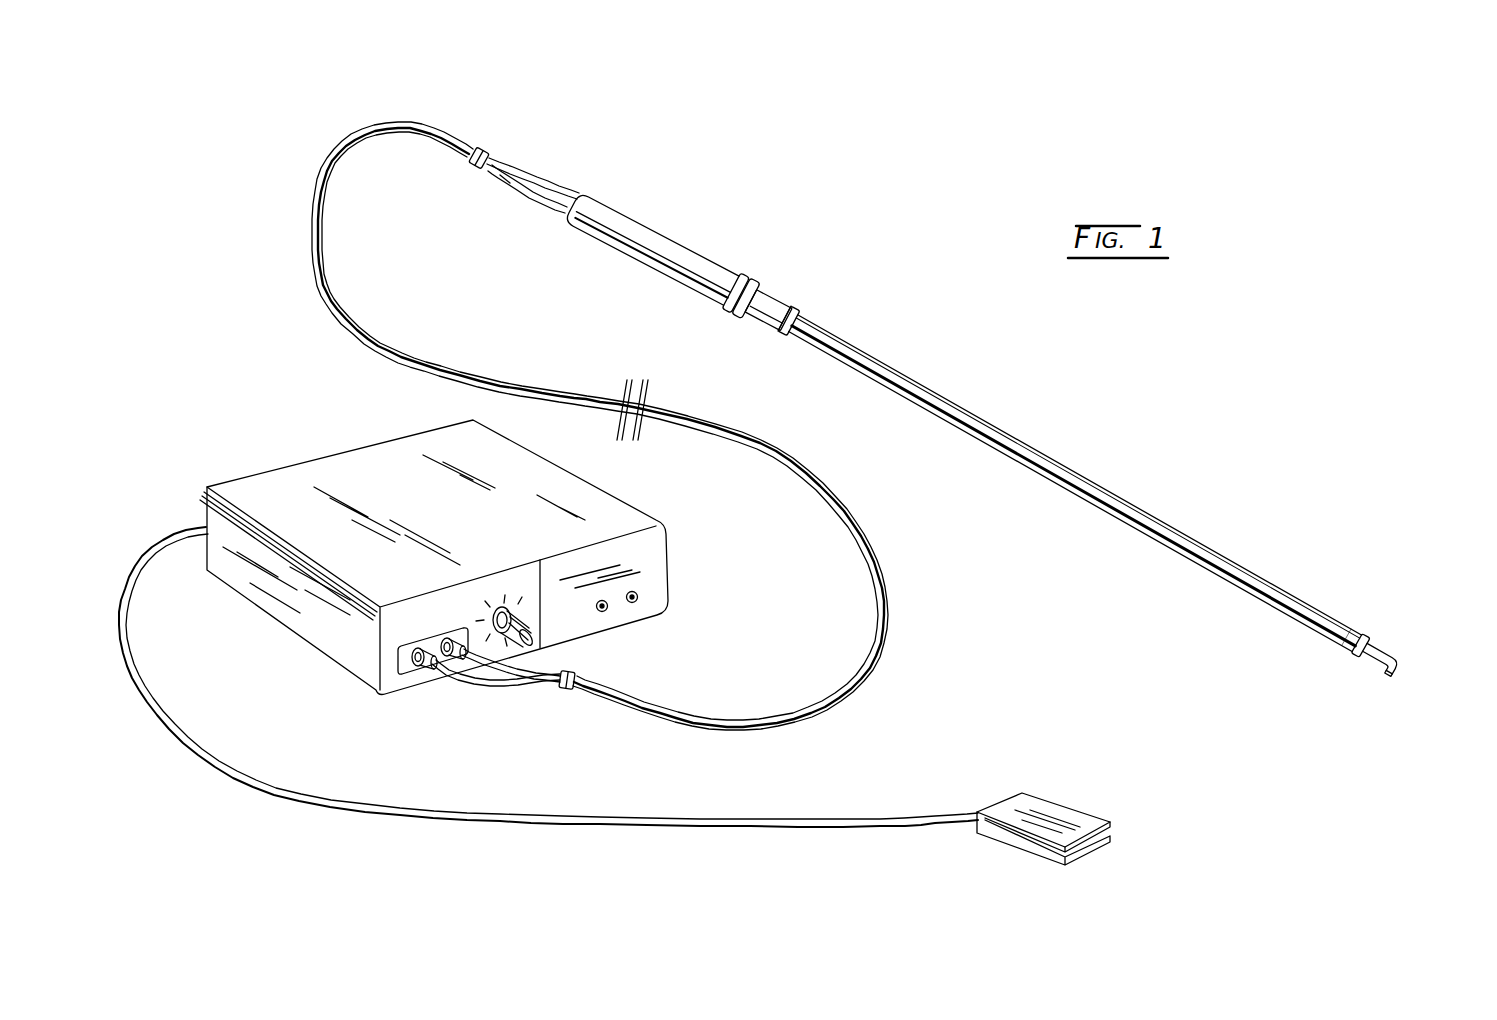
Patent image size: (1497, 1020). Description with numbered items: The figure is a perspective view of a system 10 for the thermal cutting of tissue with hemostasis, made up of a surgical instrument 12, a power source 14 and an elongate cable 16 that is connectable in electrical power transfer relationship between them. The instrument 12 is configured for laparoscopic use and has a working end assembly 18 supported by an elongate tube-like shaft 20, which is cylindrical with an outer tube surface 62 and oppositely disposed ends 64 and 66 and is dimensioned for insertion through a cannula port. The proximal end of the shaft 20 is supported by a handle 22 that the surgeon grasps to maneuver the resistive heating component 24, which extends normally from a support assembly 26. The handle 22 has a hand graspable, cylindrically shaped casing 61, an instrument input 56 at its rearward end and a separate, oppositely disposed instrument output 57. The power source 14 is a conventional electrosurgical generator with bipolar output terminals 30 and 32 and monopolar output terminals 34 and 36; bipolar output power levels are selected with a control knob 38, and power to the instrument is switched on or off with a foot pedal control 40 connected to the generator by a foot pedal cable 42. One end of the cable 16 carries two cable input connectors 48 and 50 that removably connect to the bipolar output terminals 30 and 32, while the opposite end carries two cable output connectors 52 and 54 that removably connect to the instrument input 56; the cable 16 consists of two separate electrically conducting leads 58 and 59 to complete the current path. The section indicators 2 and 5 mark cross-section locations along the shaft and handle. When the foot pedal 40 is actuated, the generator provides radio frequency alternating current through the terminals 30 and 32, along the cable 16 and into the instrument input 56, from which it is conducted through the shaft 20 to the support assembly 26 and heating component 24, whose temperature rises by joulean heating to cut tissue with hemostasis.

The system 10 is at (917, 196).
The surgical instrument 12 is at (763, 210).
The power source 14 is at (407, 458).
The elongate cable 16 is at (880, 608).
The working end assembly 18 is at (1397, 626).
The shaft 20 is at (1003, 427).
The handle 22 is at (650, 214).
The heating component 24 is at (1395, 648).
The support assembly 26 is at (1380, 655).
The bipolar output terminal 30 is at (423, 657).
The bipolar output terminal 32 is at (452, 640).
The monopolar output terminal 34 is at (606, 610).
The monopolar output terminal 36 is at (639, 598).
The control knob 38 is at (532, 632).
The foot pedal control 40 is at (1053, 808).
The foot pedal cable 42 is at (860, 818).
The cable input connector 48 is at (432, 668).
The cable input connector 50 is at (466, 665).
The cable output connector 52 is at (575, 178).
The cable output connector 54 is at (557, 208).
The instrument input 56 is at (597, 180).
The instrument output 57 is at (777, 263).
The electrically conducting lead 58 is at (523, 170).
The electrically conducting lead 59 is at (510, 190).
The casing 61 is at (683, 237).
The outer tube surface 62 is at (1157, 517).
The shaft end 64 is at (1350, 658).
The shaft end 66 is at (730, 323).
The section line 2- 2 is at (1334, 630).
The section line 5- 5 is at (707, 279).